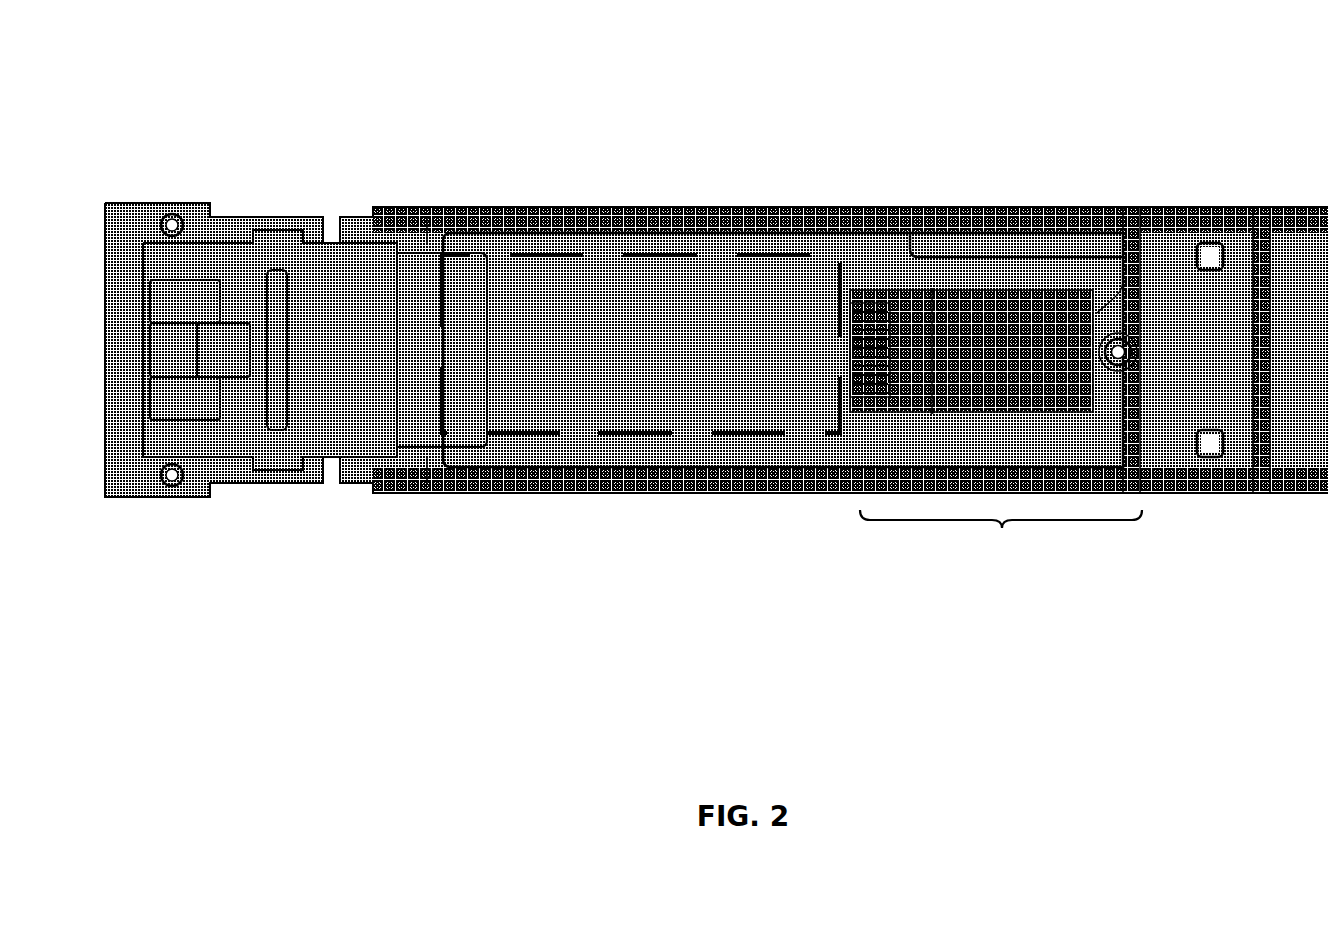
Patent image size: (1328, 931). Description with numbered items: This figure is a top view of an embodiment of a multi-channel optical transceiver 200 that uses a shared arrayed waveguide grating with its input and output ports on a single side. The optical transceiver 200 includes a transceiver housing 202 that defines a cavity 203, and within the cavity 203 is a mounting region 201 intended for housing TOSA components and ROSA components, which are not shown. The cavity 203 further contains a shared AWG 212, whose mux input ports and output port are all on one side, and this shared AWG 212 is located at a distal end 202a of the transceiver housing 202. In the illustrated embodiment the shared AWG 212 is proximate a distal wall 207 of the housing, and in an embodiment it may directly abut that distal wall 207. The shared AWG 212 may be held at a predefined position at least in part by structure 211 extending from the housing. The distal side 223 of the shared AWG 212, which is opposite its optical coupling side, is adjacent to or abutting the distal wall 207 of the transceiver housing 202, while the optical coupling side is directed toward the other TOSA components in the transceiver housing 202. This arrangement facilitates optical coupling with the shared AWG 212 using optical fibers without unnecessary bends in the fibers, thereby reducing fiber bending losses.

The multi-channel optical transceiver 200 is at (256, 106).
The transceiver housing 202 is at (403, 217).
The distal end 202a is at (1001, 532).
The mounting region 201 is at (601, 255).
The cavity 203 is at (720, 280).
The distal side 223 is at (1123, 233).
The shared AWG 212 is at (1002, 342).
The structure 211 is at (1128, 340).
The distal wall 207 is at (1117, 387).